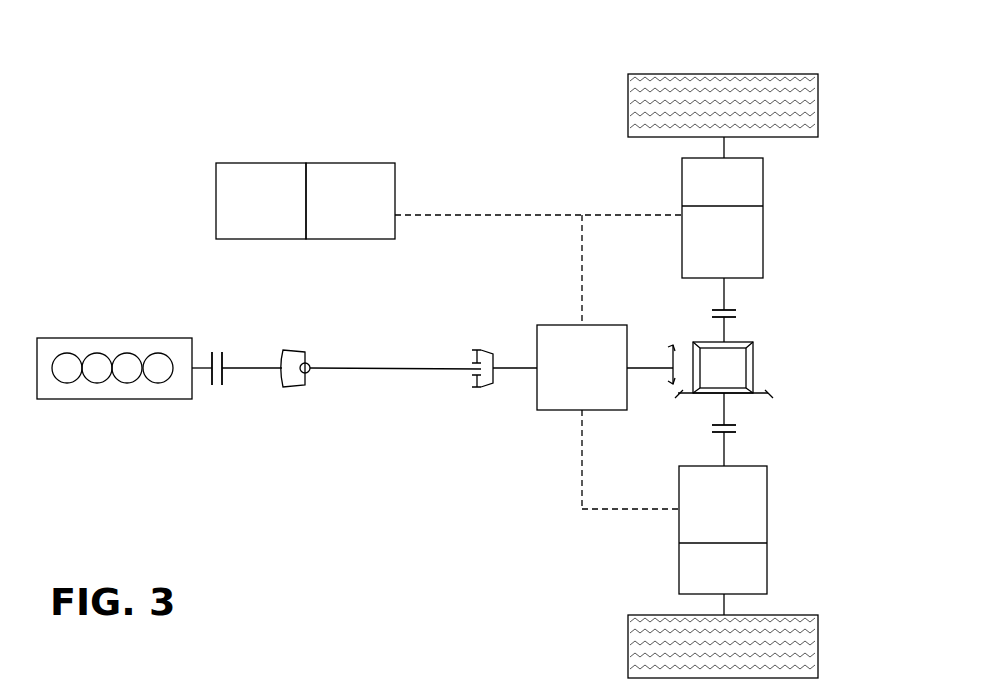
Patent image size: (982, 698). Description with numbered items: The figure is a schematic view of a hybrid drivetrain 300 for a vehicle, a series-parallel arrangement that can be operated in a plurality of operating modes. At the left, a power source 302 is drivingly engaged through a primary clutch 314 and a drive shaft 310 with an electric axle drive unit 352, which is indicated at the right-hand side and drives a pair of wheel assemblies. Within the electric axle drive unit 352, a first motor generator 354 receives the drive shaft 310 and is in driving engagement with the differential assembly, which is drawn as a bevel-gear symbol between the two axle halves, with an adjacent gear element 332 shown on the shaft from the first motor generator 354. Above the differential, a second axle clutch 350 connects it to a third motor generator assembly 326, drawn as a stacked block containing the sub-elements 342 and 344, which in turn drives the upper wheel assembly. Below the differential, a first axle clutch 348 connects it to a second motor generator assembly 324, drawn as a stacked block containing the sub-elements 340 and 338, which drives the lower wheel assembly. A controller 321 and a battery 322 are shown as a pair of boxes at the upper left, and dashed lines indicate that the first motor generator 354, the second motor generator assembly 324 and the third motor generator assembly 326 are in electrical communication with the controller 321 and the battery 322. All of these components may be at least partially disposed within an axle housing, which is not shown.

The hybrid drivetrain 300 is at (720, 46).
The power source 302 is at (80, 338).
The drive shaft 310 is at (388, 370).
The primary clutch 314 is at (228, 385).
The controller 321 is at (346, 163).
The battery 322 is at (260, 163).
The second motor generator assembly 324 is at (768, 466).
The third motor generator assembly 326 is at (764, 160).
The bevel gear 332 is at (649, 365).
The motor 338 is at (724, 567).
The gearbox 340 is at (724, 507).
The gearbox 342 is at (724, 182).
The motor 344 is at (724, 242).
The first axle clutch 348 is at (736, 426).
The second axle clutch 350 is at (736, 312).
The electric axle drive unit 352 is at (605, 92).
The first motor generator 354 is at (553, 325).